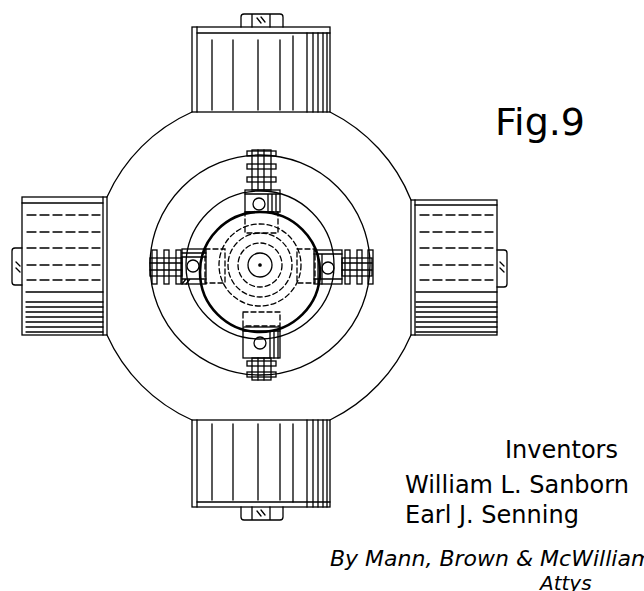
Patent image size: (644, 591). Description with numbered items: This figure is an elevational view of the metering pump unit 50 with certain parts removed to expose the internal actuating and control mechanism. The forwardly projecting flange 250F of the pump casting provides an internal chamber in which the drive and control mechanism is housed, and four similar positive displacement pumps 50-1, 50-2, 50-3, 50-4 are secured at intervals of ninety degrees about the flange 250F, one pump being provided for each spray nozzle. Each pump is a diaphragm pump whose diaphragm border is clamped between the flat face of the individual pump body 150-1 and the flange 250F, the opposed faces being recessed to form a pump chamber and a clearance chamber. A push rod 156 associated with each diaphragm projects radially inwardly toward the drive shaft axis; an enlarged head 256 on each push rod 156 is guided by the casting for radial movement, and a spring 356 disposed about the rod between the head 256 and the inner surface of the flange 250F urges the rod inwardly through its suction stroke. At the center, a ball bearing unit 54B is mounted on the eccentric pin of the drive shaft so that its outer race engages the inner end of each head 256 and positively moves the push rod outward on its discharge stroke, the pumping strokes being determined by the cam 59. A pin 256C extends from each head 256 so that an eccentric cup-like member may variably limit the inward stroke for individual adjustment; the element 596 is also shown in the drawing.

The metering pump unit 50 is at (412, 171).
The positive displacement pump 50-1 is at (190, 66).
The positive displacement pump 50-2 is at (479, 233).
The positive displacement pump 50-3 is at (207, 444).
The positive displacement pump 50-4 is at (53, 302).
The pump body 150-1 is at (312, 78).
The forwardly projecting flange 250F is at (354, 143).
The push rod 156 is at (247, 172).
The spring 356 is at (274, 165).
The enlarged head 256 is at (283, 203).
The pin 256C is at (197, 262).
The ball bearing unit 54B is at (310, 222).
The piston follower spring 596 is at (190, 288).
The cam 59 is at (215, 300).